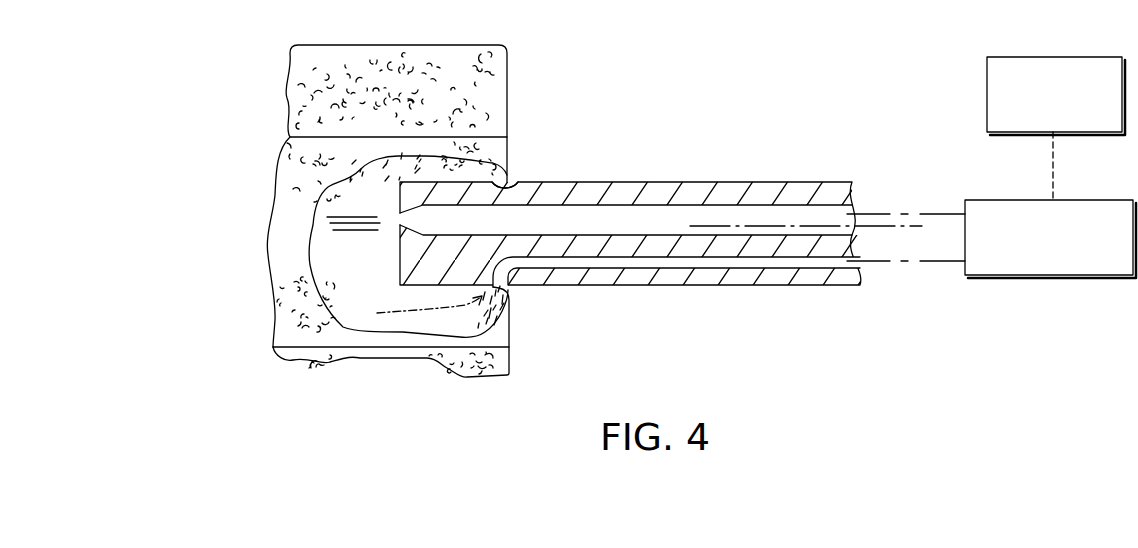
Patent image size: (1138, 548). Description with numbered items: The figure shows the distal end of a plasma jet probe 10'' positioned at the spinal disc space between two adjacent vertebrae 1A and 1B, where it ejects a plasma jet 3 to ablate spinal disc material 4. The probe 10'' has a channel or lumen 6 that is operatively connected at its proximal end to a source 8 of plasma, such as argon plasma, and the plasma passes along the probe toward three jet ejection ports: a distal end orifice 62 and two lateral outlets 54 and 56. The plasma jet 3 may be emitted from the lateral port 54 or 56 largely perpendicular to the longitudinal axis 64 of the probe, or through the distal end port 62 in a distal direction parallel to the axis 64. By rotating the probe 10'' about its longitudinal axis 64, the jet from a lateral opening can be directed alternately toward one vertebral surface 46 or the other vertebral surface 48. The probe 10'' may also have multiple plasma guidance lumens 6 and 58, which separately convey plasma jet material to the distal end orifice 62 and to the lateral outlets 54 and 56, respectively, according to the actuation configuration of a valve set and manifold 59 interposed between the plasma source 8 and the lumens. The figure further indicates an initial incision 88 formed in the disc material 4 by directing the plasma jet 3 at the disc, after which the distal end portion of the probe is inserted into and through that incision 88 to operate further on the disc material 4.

The vertebra 1A is at (497, 102).
The vertebra 1B is at (470, 365).
The plasma jet 3 is at (352, 232).
The spinal disc material 4 is at (427, 173).
The channel or lumen 6 is at (683, 226).
The source of plasma 8 is at (999, 57).
The plasma jet probe 10'' is at (630, 185).
The vertebral surface 46 is at (335, 137).
The vertebral surface 48 is at (293, 347).
The lateral outlet 54 is at (513, 278).
The lateral outlet 56 is at (510, 187).
The plasma guidance lumen 58 is at (803, 268).
The valve set and manifold 59 is at (1020, 200).
The distal end orifice 62 is at (398, 213).
The longitudinal axis 64 is at (900, 226).
The incision 88 is at (507, 180).